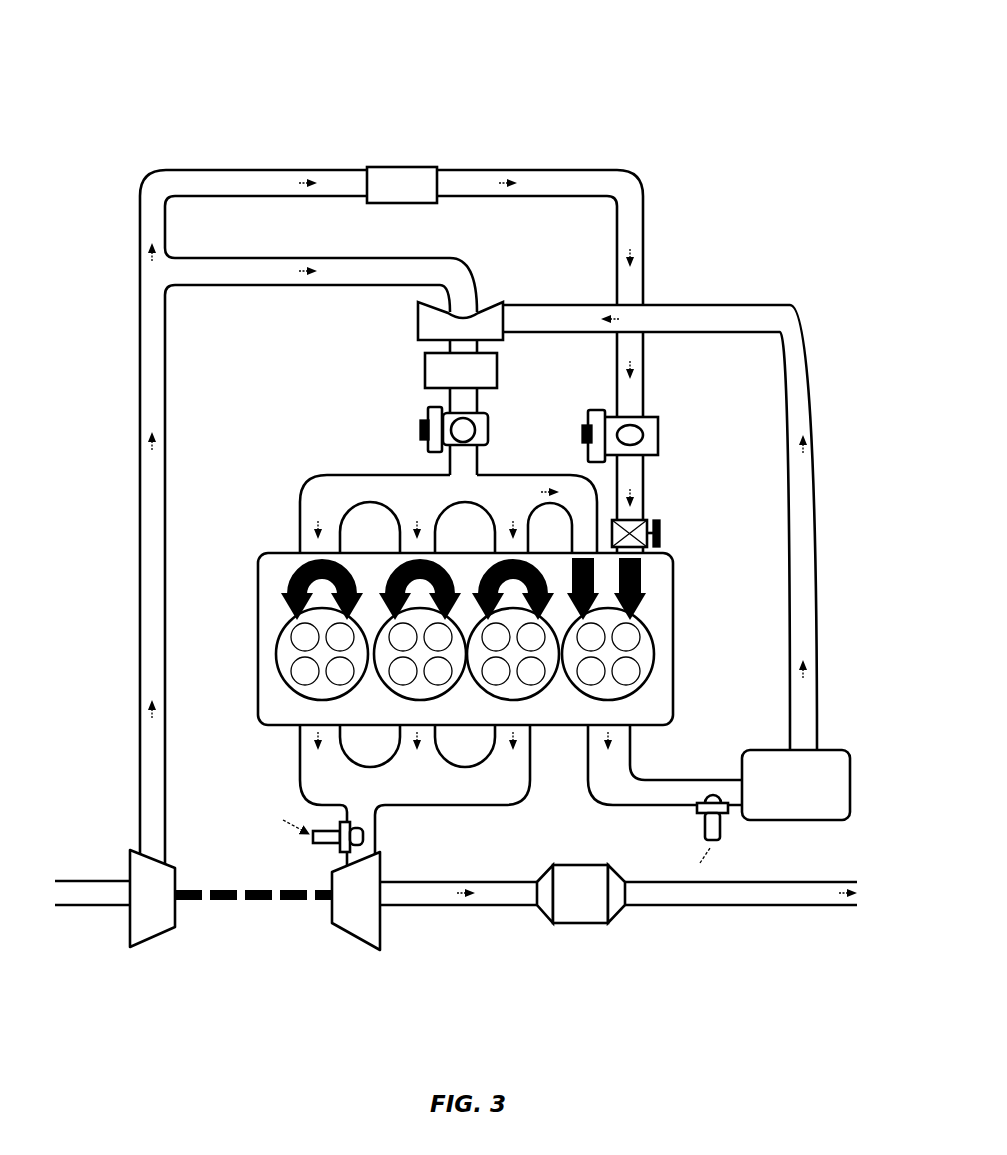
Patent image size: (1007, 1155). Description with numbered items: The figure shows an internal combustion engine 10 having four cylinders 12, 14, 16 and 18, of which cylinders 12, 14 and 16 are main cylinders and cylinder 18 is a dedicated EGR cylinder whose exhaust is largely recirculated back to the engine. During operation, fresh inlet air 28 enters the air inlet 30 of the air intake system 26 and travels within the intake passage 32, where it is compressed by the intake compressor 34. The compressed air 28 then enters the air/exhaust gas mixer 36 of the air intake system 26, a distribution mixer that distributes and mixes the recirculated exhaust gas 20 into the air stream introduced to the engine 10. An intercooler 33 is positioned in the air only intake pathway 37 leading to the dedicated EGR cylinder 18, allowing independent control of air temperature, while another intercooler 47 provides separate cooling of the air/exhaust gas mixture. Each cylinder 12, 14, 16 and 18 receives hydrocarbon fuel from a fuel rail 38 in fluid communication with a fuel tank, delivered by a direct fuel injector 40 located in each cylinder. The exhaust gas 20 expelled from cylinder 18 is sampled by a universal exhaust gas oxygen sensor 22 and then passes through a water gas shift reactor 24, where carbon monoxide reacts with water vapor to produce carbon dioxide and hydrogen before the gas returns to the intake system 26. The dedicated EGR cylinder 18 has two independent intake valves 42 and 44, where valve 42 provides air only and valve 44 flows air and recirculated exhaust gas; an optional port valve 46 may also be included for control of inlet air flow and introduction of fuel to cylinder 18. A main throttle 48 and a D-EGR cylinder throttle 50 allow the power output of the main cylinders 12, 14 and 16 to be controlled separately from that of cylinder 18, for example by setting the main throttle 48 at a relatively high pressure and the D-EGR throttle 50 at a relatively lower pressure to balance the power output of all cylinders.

The internal combustion engine 10 is at (203, 56).
The cylinder 12 is at (327, 688).
The cylinder 14 is at (425, 688).
The cylinder 16 is at (517, 687).
The dedicated EGR cylinder 18 is at (650, 686).
The exhaust gas 20 is at (604, 770).
The universal exhaust gas oxygen sensor 22 is at (694, 818).
The water gas shift reactor 24 is at (796, 785).
The air intake system 26 is at (378, 298).
The inlet air 28 is at (62, 838).
The air inlet 30 is at (70, 893).
The intake passage 32 is at (148, 590).
The intercooler 33 is at (478, 135).
The intake compressor 34 is at (161, 926).
The air/exhaust gas mixer 36 is at (484, 291).
The air only intake pathway 37 is at (632, 193).
The fuel rail 38 is at (270, 585).
The direct fuel injector 40 is at (290, 608).
The intake valve 42 is at (650, 608).
The intake valve 44 is at (562, 565).
The port valve 46 is at (676, 523).
The intercooler 47 is at (288, 370).
The main throttle 48 is at (416, 428).
The D-EGR cylinder throttle 50 is at (670, 422).